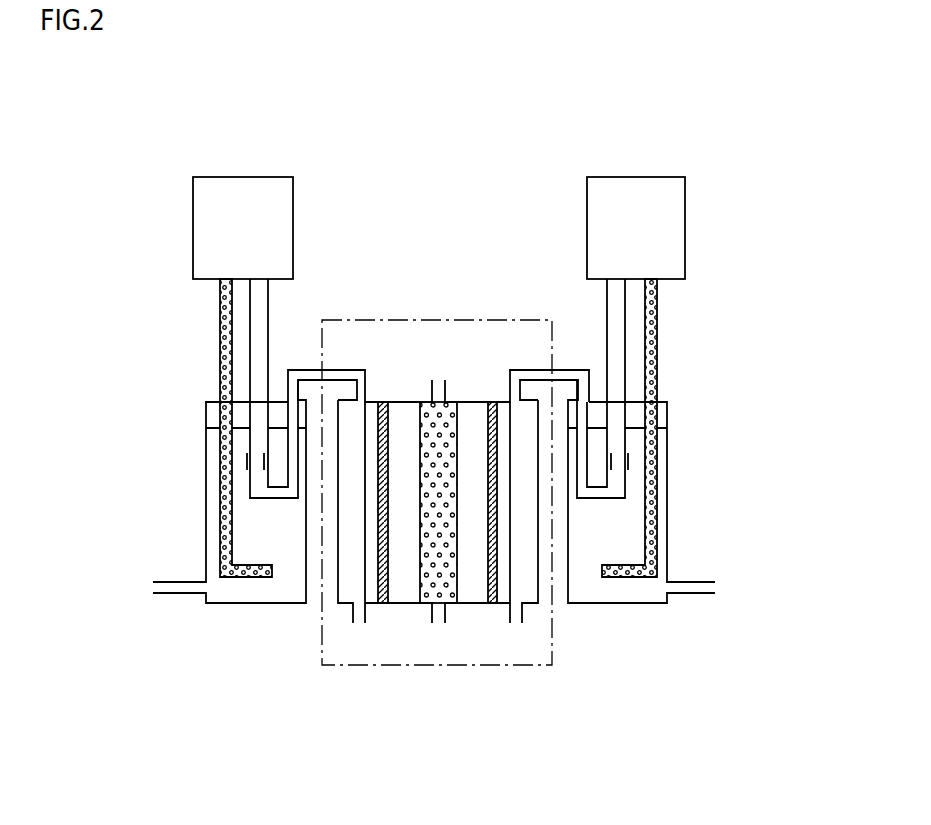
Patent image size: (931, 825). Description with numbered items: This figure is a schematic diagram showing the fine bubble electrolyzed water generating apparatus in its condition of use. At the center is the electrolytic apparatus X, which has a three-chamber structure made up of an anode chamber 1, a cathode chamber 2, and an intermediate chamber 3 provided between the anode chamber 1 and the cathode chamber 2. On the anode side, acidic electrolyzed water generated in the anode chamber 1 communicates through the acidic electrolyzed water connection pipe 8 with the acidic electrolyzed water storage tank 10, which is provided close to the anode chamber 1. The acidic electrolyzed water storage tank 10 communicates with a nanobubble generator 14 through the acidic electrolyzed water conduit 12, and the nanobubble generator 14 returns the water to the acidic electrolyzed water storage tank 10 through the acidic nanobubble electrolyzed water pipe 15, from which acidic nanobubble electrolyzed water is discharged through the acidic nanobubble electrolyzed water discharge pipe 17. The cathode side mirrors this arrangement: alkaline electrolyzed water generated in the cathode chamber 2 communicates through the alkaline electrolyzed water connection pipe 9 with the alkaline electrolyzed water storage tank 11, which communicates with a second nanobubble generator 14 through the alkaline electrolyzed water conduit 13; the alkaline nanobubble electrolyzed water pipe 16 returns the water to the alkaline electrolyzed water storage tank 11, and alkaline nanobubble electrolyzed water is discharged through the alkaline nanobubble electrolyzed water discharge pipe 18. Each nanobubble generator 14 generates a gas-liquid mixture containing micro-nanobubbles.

The anode chamber 1 is at (350, 583).
The cathode chamber 2 is at (520, 583).
The intermediate chamber 3 is at (457, 602).
The acidic electrolyzed water connection pipe 8 is at (343, 375).
The alkaline electrolyzed water connection pipe 9 is at (535, 375).
The acidic electrolyzed water storage tank 10 is at (255, 590).
The alkaline electrolyzed water storage tank 11 is at (613, 595).
The acidic electrolyzed water conduit 12 is at (262, 318).
The alkaline electrolyzed water conduit 13 is at (617, 318).
The nanobubble generator 14 is at (242, 200).
The acidic nanobubble electrolyzed water pipe 15 is at (220, 312).
The alkaline nanobubble electrolyzed water pipe 16 is at (658, 313).
The acidic nanobubble electrolyzed water discharge pipe 17 is at (178, 590).
The alkaline nanobubble electrolyzed water discharge pipe 18 is at (693, 590).
The electrolytic apparatus X is at (438, 305).